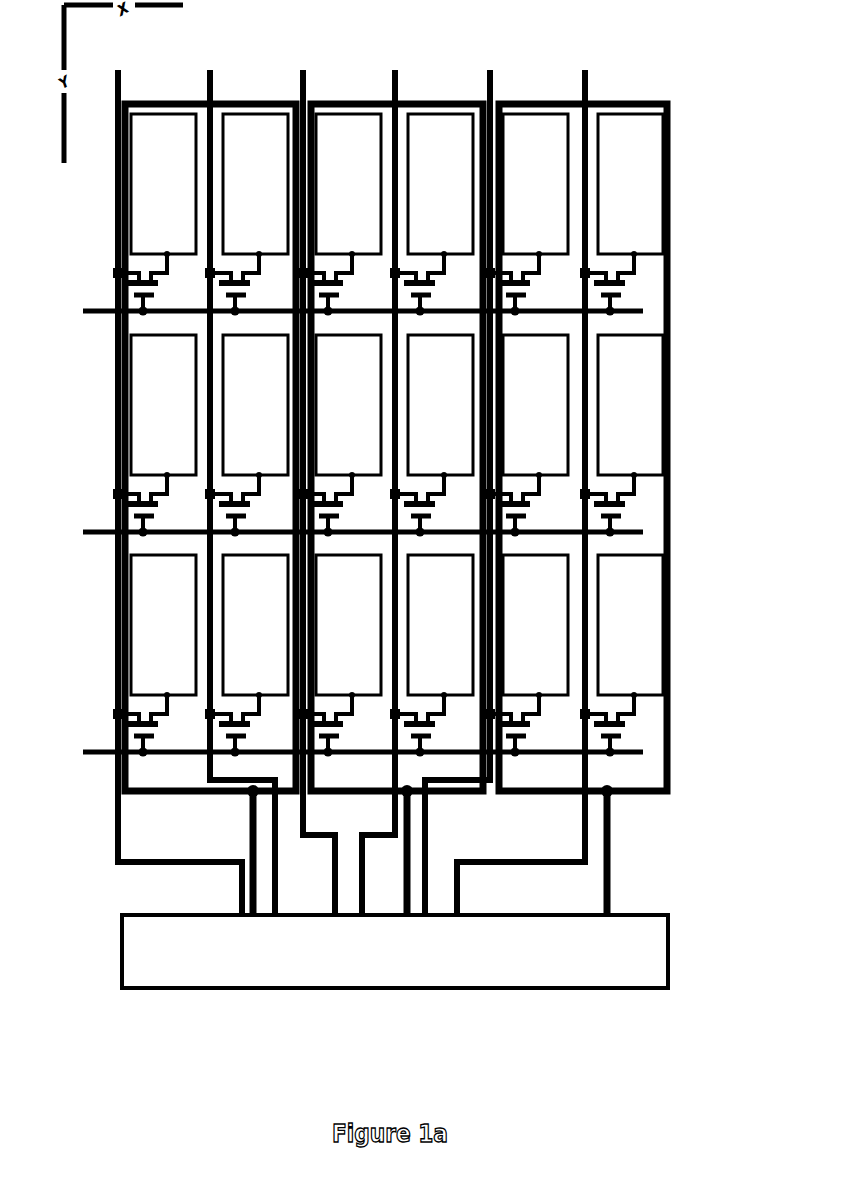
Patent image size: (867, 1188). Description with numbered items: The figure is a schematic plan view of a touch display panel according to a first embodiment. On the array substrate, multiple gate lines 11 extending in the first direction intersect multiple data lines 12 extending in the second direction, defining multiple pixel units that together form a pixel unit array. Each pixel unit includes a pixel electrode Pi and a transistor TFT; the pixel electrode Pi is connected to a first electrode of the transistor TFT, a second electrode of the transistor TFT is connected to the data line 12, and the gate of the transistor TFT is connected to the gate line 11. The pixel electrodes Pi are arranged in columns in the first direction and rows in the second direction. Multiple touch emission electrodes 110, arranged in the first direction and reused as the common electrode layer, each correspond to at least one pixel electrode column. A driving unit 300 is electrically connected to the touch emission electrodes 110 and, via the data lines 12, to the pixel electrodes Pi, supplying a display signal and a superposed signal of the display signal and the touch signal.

The gate line 11 is at (623, 308).
The data line 12 is at (305, 100).
The touch emission electrode 110 is at (407, 98).
The driving unit 300 is at (623, 967).
The pixel electrode Pi is at (160, 430).
The transistor TFT is at (140, 497).